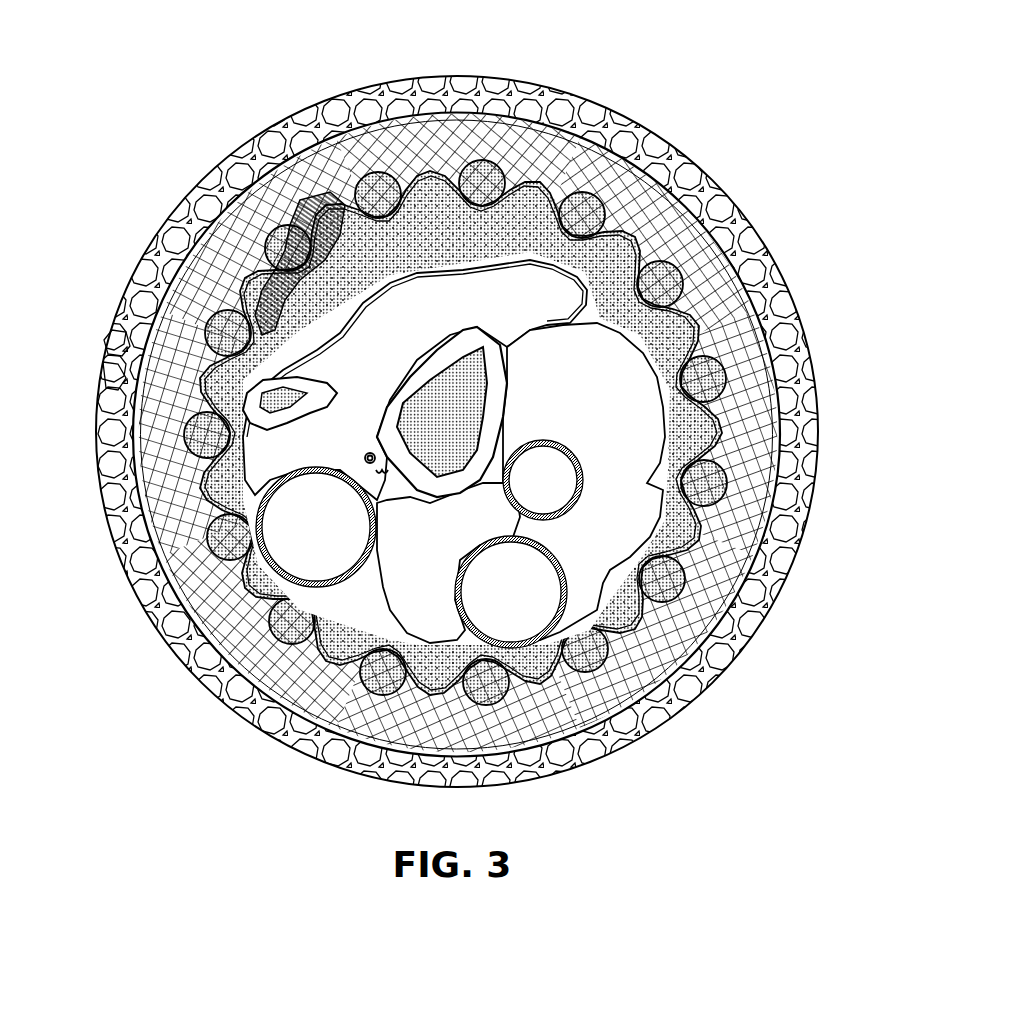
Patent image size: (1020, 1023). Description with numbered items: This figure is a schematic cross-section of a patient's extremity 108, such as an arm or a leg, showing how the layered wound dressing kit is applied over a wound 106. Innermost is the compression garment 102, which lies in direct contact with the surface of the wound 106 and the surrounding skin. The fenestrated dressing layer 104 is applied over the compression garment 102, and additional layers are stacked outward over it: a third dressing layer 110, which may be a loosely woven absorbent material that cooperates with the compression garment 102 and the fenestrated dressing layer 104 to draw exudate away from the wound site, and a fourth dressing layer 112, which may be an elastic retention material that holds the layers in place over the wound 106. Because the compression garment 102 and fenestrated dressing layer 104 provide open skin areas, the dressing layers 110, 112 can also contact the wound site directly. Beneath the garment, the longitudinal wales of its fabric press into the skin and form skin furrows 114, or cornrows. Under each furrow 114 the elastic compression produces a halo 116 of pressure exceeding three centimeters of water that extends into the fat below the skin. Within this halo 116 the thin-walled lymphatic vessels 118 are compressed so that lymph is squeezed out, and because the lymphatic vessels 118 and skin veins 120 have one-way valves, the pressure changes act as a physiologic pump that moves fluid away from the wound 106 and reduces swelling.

The compression garment 102 is at (205, 330).
The fenestrated dressing layer 104 is at (700, 238).
The wound 106 is at (322, 225).
The extremity 108 is at (700, 430).
The dressing layer 110 is at (221, 190).
The dressing layer 112 is at (413, 75).
The skin furrows 114 is at (122, 343).
The halo 116 is at (648, 137).
The lymphatic vessels 118 is at (262, 567).
The skin veins 120 is at (626, 741).